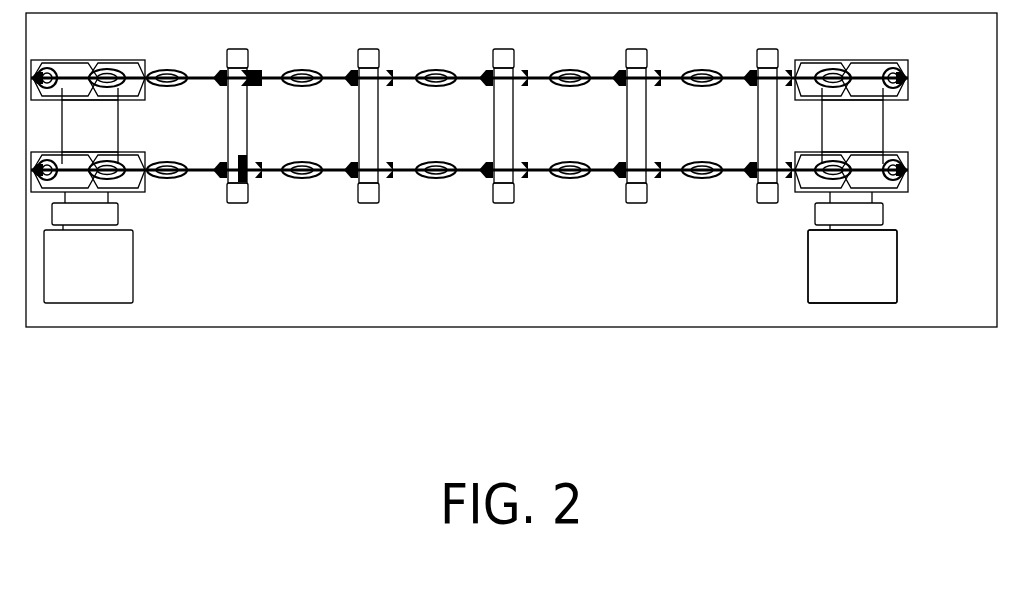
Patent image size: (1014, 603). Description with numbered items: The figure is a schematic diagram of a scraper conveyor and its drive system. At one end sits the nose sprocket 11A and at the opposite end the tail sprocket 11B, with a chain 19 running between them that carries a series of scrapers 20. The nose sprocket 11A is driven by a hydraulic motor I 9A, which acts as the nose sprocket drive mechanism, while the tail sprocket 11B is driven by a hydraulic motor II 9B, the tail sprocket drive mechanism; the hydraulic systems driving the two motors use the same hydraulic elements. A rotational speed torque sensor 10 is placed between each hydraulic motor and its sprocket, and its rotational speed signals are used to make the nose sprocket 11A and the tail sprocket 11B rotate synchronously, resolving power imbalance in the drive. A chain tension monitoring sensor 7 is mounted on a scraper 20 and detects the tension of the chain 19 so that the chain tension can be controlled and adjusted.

The chain tension monitoring sensor 7 is at (258, 194).
The hydraulic motor I 9A is at (852, 247).
The hydraulic motor II 9B is at (88, 247).
The rotational speed torque sensor 10 is at (881, 249).
The nose sprocket 11A is at (851, 126).
The tail sprocket 11B is at (88, 126).
The chain 19 is at (405, 183).
The scraper 20 is at (522, 204).